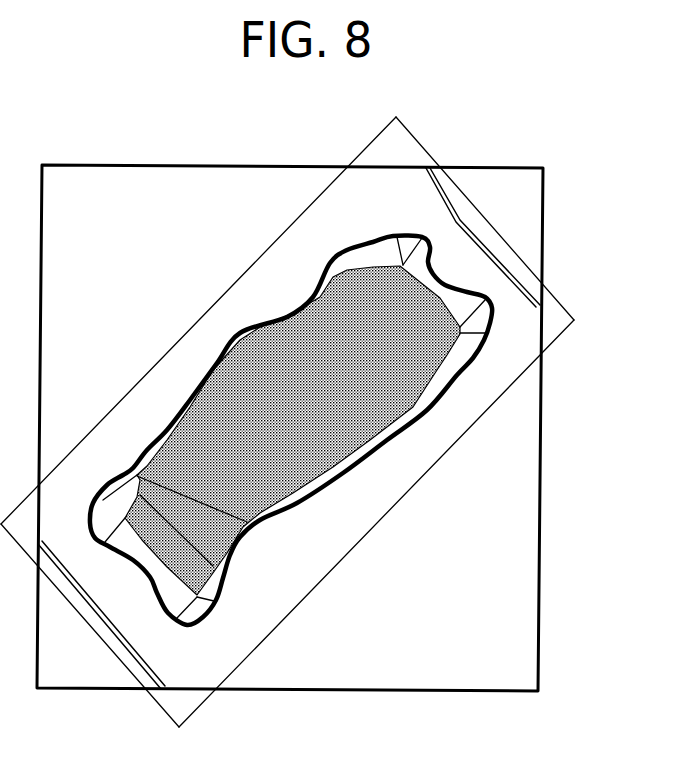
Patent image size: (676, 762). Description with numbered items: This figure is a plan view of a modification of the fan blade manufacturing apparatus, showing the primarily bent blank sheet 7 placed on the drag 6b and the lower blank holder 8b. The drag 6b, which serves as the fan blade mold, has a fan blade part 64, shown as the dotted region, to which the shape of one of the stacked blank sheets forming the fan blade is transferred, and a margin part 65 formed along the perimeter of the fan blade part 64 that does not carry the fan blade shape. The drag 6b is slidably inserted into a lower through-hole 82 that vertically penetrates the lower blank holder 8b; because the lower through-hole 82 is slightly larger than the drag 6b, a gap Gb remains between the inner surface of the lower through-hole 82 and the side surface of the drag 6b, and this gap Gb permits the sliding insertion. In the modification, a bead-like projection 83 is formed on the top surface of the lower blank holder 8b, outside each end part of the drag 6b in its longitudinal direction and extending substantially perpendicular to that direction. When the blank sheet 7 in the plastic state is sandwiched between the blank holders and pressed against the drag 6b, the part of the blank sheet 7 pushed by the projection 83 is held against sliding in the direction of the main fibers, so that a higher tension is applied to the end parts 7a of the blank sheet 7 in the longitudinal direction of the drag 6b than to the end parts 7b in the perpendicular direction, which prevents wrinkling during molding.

The blank sheet 7 is at (303, 425).
The end parts of the blank sheet in the longitudinal direction of the drag 7a is at (489, 231).
The end parts of the blank sheet in the direction perpendicular to the longitudinal 7b is at (114, 405).
The projection 83 is at (526, 284).
The lower through-hole 82 is at (417, 427).
The lower blank holder 8b is at (351, 430).
The fan blade mold (drag) 6b is at (286, 430).
The fan blade part 64 is at (205, 427).
The margin part 65 is at (260, 327).
The gap Gb is at (337, 478).